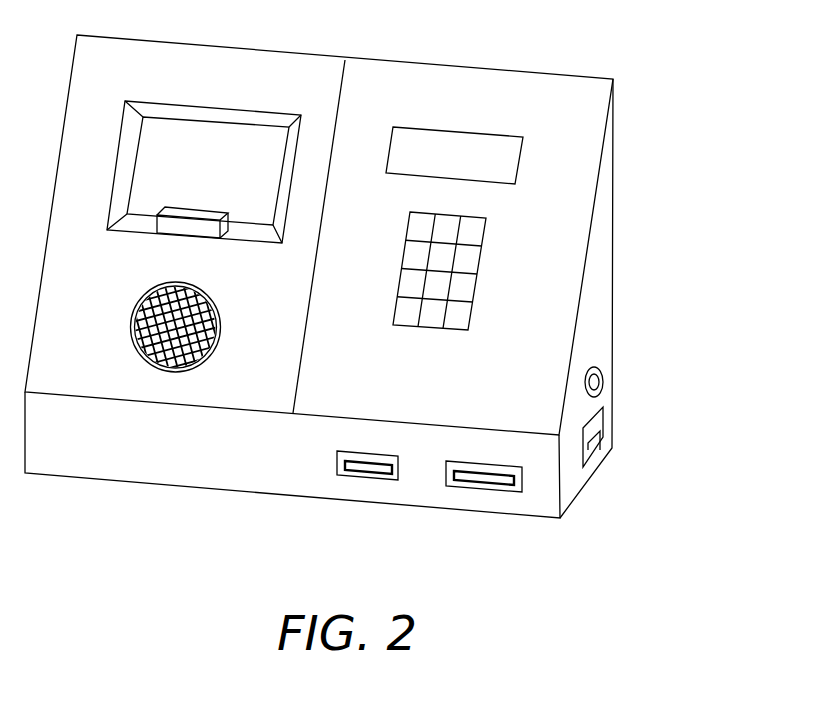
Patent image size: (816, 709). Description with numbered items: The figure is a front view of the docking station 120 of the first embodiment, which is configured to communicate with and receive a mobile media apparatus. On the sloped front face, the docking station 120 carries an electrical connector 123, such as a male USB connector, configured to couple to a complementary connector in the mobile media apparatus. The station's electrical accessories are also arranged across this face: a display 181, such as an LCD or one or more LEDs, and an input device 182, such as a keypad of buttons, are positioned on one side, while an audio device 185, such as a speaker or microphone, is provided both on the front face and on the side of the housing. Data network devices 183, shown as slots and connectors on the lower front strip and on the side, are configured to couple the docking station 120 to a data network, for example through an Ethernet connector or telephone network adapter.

The docking station 120 is at (135, 587).
The electrical connector 123 is at (205, 203).
The display 181 is at (436, 142).
The input device 182 is at (488, 259).
The data network device 183 is at (368, 487).
The audio device 185 is at (226, 328).